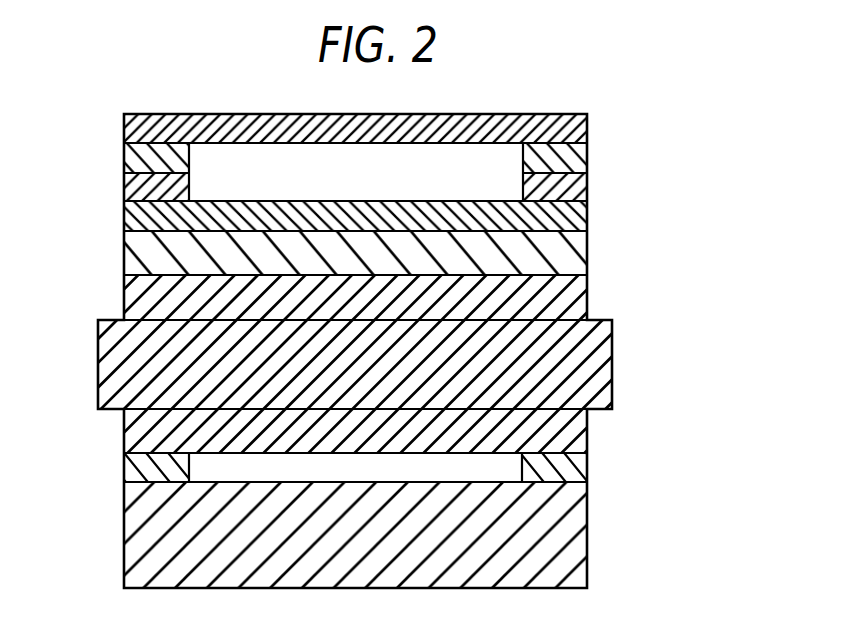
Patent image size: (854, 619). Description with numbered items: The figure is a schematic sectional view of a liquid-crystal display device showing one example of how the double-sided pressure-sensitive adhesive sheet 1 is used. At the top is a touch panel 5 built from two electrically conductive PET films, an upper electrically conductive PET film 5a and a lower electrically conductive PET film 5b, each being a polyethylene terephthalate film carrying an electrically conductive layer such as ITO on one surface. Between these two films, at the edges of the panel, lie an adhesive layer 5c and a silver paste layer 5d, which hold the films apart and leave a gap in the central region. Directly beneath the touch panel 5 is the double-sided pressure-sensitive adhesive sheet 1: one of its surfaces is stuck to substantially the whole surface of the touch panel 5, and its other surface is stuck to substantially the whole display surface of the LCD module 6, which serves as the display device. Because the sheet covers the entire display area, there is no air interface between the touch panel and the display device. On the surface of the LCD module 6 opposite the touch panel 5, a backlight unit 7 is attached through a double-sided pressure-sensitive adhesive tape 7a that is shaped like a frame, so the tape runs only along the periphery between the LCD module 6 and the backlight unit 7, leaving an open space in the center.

The double-sided pressure-sensitive adhesive sheet 1 is at (587, 250).
The touch panel 5 is at (665, 118).
The upper electrically conductive PET film 5a is at (587, 128).
The lower electrically conductive PET film 5b is at (587, 216).
The adhesive layer 5c is at (587, 157).
The silver paste layer 5d is at (587, 187).
The LCD module 6 is at (663, 282).
The backlight unit 7 is at (587, 532).
The double-sided pressure-sensitive adhesive tape 7a is at (587, 465).